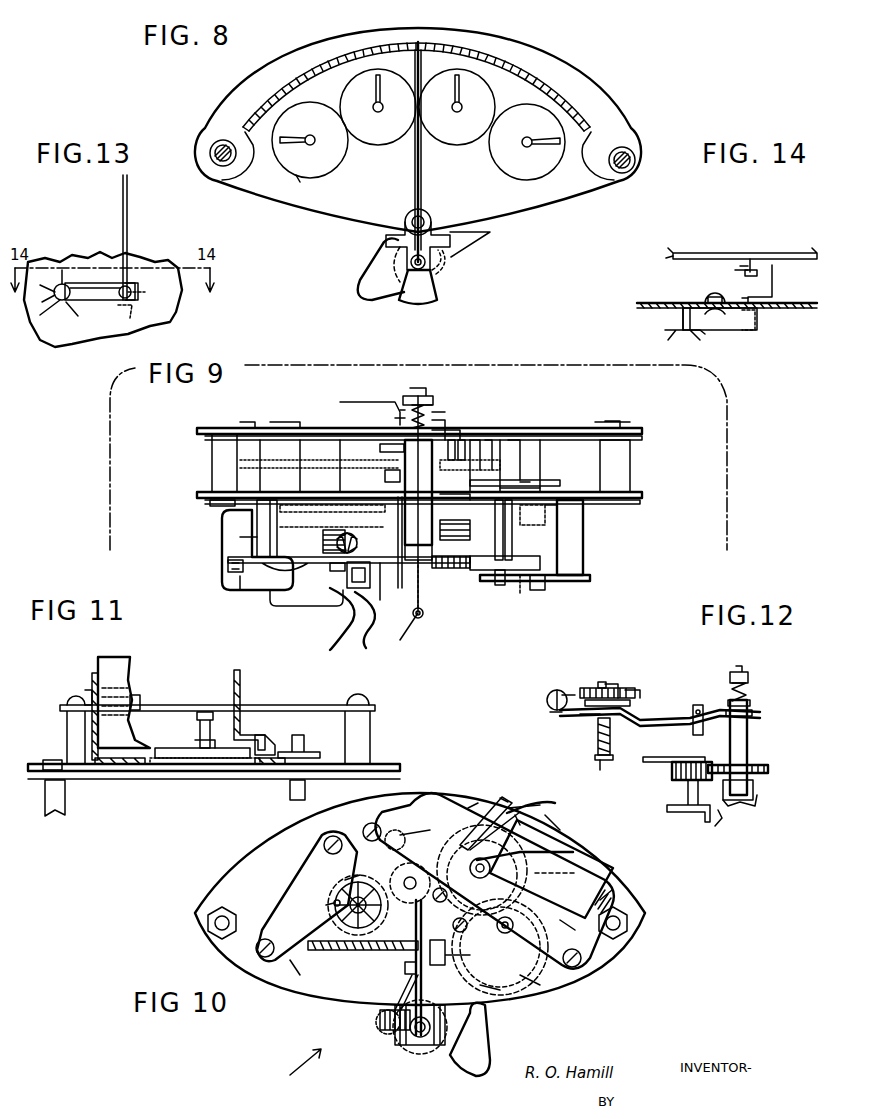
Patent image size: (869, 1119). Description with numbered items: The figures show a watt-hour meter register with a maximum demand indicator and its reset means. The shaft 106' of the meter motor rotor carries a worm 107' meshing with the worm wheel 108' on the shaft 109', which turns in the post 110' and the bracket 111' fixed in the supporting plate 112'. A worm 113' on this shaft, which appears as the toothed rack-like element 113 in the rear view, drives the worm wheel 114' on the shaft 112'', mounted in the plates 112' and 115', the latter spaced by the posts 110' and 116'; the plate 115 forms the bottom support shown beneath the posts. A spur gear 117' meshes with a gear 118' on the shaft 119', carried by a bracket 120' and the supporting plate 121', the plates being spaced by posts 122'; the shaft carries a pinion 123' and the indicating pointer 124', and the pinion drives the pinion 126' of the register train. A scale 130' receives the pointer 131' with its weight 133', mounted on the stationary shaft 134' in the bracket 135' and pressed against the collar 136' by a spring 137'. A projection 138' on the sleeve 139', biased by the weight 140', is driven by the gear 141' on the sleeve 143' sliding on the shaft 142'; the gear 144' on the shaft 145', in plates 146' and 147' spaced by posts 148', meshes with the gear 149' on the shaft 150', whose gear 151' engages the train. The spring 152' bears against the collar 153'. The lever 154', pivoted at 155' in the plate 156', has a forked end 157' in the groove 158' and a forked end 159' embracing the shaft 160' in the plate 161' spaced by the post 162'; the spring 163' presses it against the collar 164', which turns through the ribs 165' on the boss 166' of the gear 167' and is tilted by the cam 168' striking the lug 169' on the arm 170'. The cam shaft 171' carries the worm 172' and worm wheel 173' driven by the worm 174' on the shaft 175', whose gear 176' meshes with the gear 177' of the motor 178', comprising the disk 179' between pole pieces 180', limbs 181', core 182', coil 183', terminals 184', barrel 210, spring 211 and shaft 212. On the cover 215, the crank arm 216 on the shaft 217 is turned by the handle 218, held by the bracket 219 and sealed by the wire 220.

In FIG. 9, the shaft 106' is at (438, 627).
In FIG. 9, the worm 107' is at (406, 629).
In FIG. 9, the worm wheel 108' is at (442, 592).
In FIG. 9, the shaft 109' is at (551, 589).
In FIG. 10, the shaft 109' is at (278, 979).
In FIG. 9, the post 110' is at (591, 537).
In FIG. 9, the bracket 111' is at (376, 592).
In FIG. 9, the supporting plate 112' is at (441, 472).
In FIG. 10, the supporting plate 112' is at (419, 899).
In FIG. 9, the shaft 112'' is at (537, 530).
In FIG. 10, the shaft 112'' is at (319, 910).
In FIG. 10, the rack 113 is at (361, 958).
In FIG. 9, the worm 113' is at (515, 591).
In FIG. 9, the worm wheel 114' is at (540, 598).
In FIG. 10, the worm wheel 114' is at (377, 920).
In FIG. 9, the bottom plate 115 is at (554, 575).
In FIG. 10, the plate 115' is at (305, 897).
In FIG. 9, the post 116' is at (525, 530).
In FIG. 9, the spur gear 117' is at (535, 485).
In FIG. 10, the spur gear 117' is at (350, 905).
In FIG. 9, the gear 118' is at (572, 513).
In FIG. 9, the shaft 119' is at (559, 478).
In FIG. 9, the bracket 120' is at (592, 519).
In FIG. 14, the supporting plate 121' is at (742, 238).
In FIG. 9, the supporting plate 121' is at (447, 431).
In FIG. 9, the posts 122' is at (434, 463).
In FIG. 9, the pinion 123' is at (557, 418).
In FIG. 9, the indicating pointer 124' is at (270, 413).
In FIG. 9, the pinion 126' is at (373, 445).
In FIG. 14, the scale 130' is at (653, 265).
In FIG. 9, the scale 130' is at (637, 412).
In FIG. 13, the pointer 131' is at (108, 237).
In FIG. 14, the pointer 131' is at (767, 247).
In FIG. 13, the counterbalancing weight 133' is at (118, 307).
In FIG. 14, the counterbalancing weight 133' is at (722, 274).
In FIG. 9, the counterbalancing weight 133' is at (456, 390).
In FIG. 9, the stationary shaft 134' is at (414, 374).
In FIG. 9, the bracket 135' is at (454, 412).
In FIG. 9, the collar 136' is at (384, 386).
In FIG. 9, the spring 137' is at (374, 397).
In FIG. 9, the projection 138' is at (444, 384).
In FIG. 9, the sleeve 139' is at (458, 420).
In FIG. 12, the sleeve 139' is at (762, 803).
In FIG. 9, the off-center weight 140' is at (361, 405).
In FIG. 10, the off-center weight 140' is at (488, 1039).
In FIG. 9, the gear 141' is at (374, 480).
In FIG. 12, the gear 141' is at (757, 764).
In FIG. 10, the gear 141' is at (443, 1058).
In FIG. 9, the shaft 142' is at (411, 561).
In FIG. 12, the shaft 142' is at (764, 786).
In FIG. 10, the shaft 142' is at (420, 1048).
In FIG. 9, the sleeve 143' is at (406, 504).
In FIG. 12, the sleeve 143' is at (760, 747).
In FIG. 9, the gear 144' is at (495, 406).
In FIG. 12, the gear 144' is at (679, 781).
In FIG. 10, the gear 144' is at (371, 1022).
In FIG. 9, the shaft 145' is at (457, 486).
In FIG. 12, the shaft 145' is at (686, 805).
In FIG. 9, the plate 146' is at (527, 470).
In FIG. 12, the plate 146' is at (665, 767).
In FIG. 10, the plate 146' is at (366, 1011).
In FIG. 9, the plate 147' is at (544, 431).
In FIG. 12, the plate 147' is at (735, 823).
In FIG. 9, the posts 148' is at (516, 437).
In FIG. 9, the gear 149' is at (509, 429).
In FIG. 9, the shaft 150' is at (479, 418).
In FIG. 9, the gear 151' is at (490, 412).
In FIG. 9, the spring 152' is at (462, 573).
In FIG. 12, the spring 152' is at (765, 683).
In FIG. 9, the collar 153' is at (434, 569).
In FIG. 12, the collar 153' is at (760, 666).
In FIG. 12, the lever 154' is at (660, 725).
In FIG. 10, the lever 154' is at (395, 992).
In FIG. 12, the pivot 155' is at (708, 701).
In FIG. 10, the pivot 155' is at (399, 967).
In FIG. 9, the plate 156' is at (201, 505).
In FIG. 11, the plate 156' is at (207, 755).
In FIG. 12, the forked end 157' is at (764, 695).
In FIG. 10, the forked end 157' is at (419, 1040).
In FIG. 12, the groove 158' is at (764, 712).
In FIG. 12, the forked end 159' is at (585, 737).
In FIG. 10, the forked end 159' is at (339, 869).
In FIG. 12, the shaft 160' is at (610, 773).
In FIG. 9, the plate 161' is at (238, 550).
In FIG. 11, the plate 161' is at (81, 695).
In FIG. 10, the plate 161' is at (499, 887).
In FIG. 9, the post 162' is at (366, 574).
In FIG. 9, the spring 163' is at (465, 522).
In FIG. 12, the spring 163' is at (588, 763).
In FIG. 12, the collar 164' is at (631, 700).
In FIG. 12, the diametric ribs 165' is at (626, 673).
In FIG. 12, the boss 166' is at (597, 671).
In FIG. 12, the gear 167' is at (653, 673).
In FIG. 10, the gear 167' is at (404, 895).
In FIG. 12, the cam 168' is at (542, 697).
In FIG. 10, the cam 168' is at (418, 829).
In FIG. 12, the lug 169' is at (541, 719).
In FIG. 10, the lug 169' is at (378, 819).
In FIG. 12, the arm 170' is at (576, 728).
In FIG. 9, the shaft 171' is at (374, 575).
In FIG. 12, the shaft 171' is at (551, 674).
In FIG. 10, the shaft 171' is at (455, 966).
In FIG. 12, the worm 172' is at (604, 661).
In FIG. 10, the worm 172' is at (482, 870).
In FIG. 9, the worm wheel 173' is at (322, 572).
In FIG. 10, the worm wheel 173' is at (505, 998).
In FIG. 9, the worm 174' is at (323, 541).
In FIG. 10, the worm 174' is at (528, 923).
In FIG. 9, the shaft 175' is at (334, 619).
In FIG. 10, the shaft 175' is at (505, 947).
In FIG. 9, the gear 176' is at (252, 528).
In FIG. 10, the gear 176' is at (545, 987).
In FIG. 11, the gear 177' is at (185, 729).
In FIG. 10, the gear 177' is at (493, 853).
In FIG. 11, the alternating current motor 178' is at (202, 777).
In FIG. 10, the alternating current motor 178' is at (476, 791).
In FIG. 9, the notched iron disk 179' is at (324, 516).
In FIG. 11, the notched iron disk 179' is at (205, 782).
In FIG. 10, the notched iron disk 179' is at (534, 802).
In FIG. 11, the notched pole pieces 180' is at (190, 786).
In FIG. 10, the notched pole pieces 180' is at (515, 800).
In FIG. 9, the iron limbs 181' is at (217, 601).
In FIG. 11, the iron limbs 181' is at (170, 695).
In FIG. 10, the iron limbs 181' is at (630, 882).
In FIG. 9, the laminated iron core 182' is at (215, 579).
In FIG. 11, the laminated iron core 182' is at (71, 680).
In FIG. 10, the laminated iron core 182' is at (632, 885).
In FIG. 9, the coil 183' is at (349, 597).
In FIG. 11, the coil 183' is at (124, 688).
In FIG. 10, the coil 183' is at (560, 857).
In FIG. 10, the terminals 184' is at (550, 829).
In FIG. 11, the brass barrel 210 is at (255, 740).
In FIG. 10, the spring 211 is at (576, 925).
In FIG. 10, the shaft 212 is at (566, 873).
In FIG. 13, the front cover 215 is at (148, 262).
In FIG. 14, the front cover 215 is at (786, 309).
In FIG. 9, the front cover 215 is at (722, 395).
In FIG. 14, the crank arm 216 is at (774, 280).
In FIG. 14, the shaft 217 is at (757, 322).
In FIG. 13, the handle 218 is at (95, 285).
In FIG. 14, the handle 218 is at (717, 332).
In FIG. 13, the bracket 219 is at (62, 284).
In FIG. 14, the bracket 219 is at (683, 314).
In FIG. 13, the wire 220 is at (48, 305).
In FIG. 14, the wire 220 is at (668, 333).